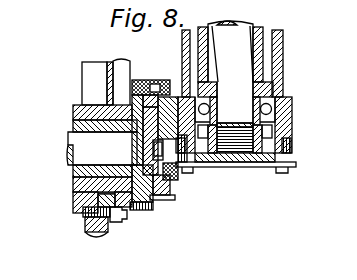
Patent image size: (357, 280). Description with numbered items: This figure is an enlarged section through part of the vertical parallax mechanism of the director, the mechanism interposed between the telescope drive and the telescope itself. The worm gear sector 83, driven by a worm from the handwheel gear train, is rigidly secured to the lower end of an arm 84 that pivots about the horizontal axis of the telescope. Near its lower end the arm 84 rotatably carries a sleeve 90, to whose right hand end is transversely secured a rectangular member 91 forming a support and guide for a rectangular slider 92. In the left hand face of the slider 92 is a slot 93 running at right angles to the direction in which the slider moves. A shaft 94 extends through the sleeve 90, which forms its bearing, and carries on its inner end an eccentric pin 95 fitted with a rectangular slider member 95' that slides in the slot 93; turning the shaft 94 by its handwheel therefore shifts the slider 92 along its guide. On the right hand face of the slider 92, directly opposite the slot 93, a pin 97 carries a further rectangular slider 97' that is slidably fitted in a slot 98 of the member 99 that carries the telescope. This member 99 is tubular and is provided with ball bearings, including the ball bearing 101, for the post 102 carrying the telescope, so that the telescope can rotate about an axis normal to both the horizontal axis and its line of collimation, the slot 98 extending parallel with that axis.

The worm gear sector 83 is at (88, 234).
The arm 84 is at (109, 82).
The sleeve 90 is at (75, 176).
The rectangular member 91 is at (146, 212).
The rectangular slider 92 is at (172, 200).
The slot 93 is at (170, 182).
The shaft 94 is at (80, 142).
The eccentric pin 95 is at (153, 70).
The rectangular slider member 95' is at (164, 86).
The pin 97 is at (165, 127).
The rectangular slider 97' is at (179, 203).
The slot 98 is at (178, 165).
The member 99 is at (292, 108).
The ball bearing 101 is at (286, 98).
The post 102 is at (242, 33).